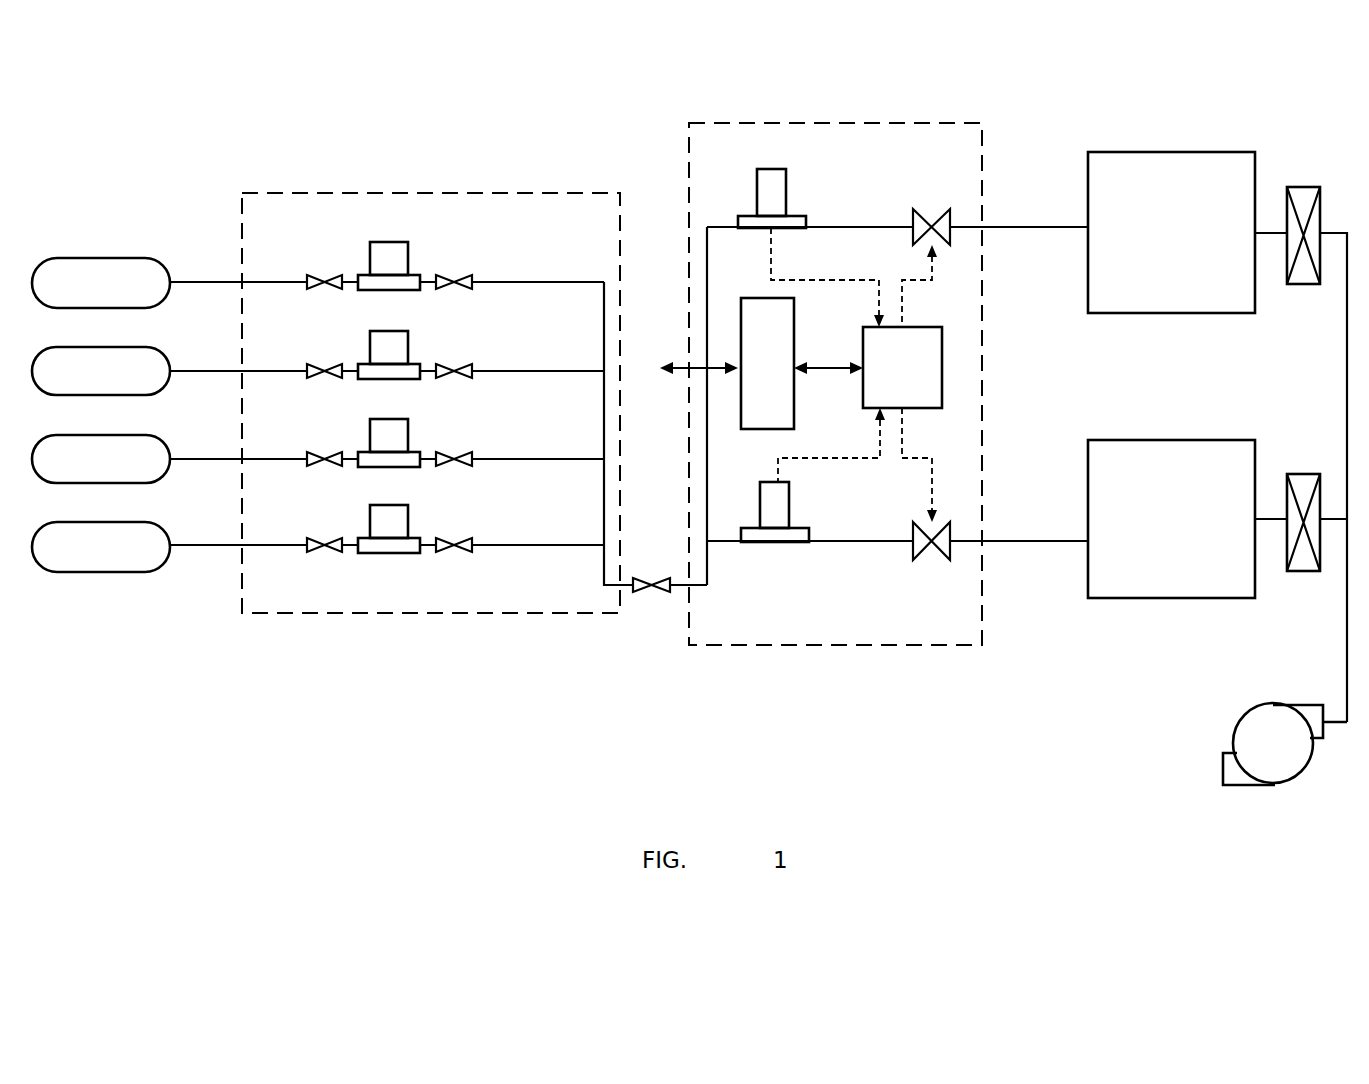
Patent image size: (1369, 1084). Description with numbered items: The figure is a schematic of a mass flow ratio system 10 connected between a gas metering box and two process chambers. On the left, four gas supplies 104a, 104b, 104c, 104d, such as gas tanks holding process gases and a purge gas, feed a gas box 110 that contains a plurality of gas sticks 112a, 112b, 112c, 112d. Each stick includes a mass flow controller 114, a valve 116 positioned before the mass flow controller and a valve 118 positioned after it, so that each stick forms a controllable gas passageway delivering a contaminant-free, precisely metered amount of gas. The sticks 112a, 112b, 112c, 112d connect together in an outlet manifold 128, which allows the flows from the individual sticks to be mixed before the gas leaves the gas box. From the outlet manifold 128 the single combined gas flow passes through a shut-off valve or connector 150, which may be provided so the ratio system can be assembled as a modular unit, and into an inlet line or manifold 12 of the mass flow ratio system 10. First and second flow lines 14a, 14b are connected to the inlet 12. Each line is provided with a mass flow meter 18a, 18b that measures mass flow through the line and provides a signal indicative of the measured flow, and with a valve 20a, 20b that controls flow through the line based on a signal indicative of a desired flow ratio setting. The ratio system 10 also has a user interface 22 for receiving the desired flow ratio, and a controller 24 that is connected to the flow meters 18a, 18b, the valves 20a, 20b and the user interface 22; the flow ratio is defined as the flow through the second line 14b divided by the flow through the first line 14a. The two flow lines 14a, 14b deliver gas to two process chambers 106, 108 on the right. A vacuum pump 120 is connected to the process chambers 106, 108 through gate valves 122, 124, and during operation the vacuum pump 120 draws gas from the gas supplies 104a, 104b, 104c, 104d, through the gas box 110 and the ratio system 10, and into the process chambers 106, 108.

The mass flow ratio system 10 is at (852, 113).
The inlet line or manifold 12 is at (707, 571).
The first flow line 14a is at (858, 227).
The second flow line 14b is at (858, 541).
The mass flow meter 18a is at (771, 169).
The mass flow meter 18b is at (768, 482).
The valve 20a is at (936, 210).
The valve 20b is at (940, 560).
The user interface 22 is at (755, 298).
The controller 24 is at (922, 327).
The gas supply 104a is at (170, 258).
The gas supply 104b is at (170, 347).
The gas supply 104c is at (170, 435).
The gas supply 104d is at (170, 522).
The process chamber 106 is at (1170, 152).
The process chamber 108 is at (1170, 440).
The gas box 110 is at (463, 183).
The gas stick 112a is at (525, 282).
The gas stick 112b is at (525, 371).
The gas stick 112c is at (525, 459).
The gas stick 112d is at (525, 545).
The mass flow controller 114 is at (389, 242).
The valve 116 is at (324, 275).
The valve 118 is at (452, 275).
The vacuum pump 120 is at (1296, 785).
The gate valve 122 is at (1307, 187).
The gate valve 124 is at (1307, 474).
The outlet manifold 128 is at (604, 567).
The shut-off valve or connector 150 is at (650, 595).